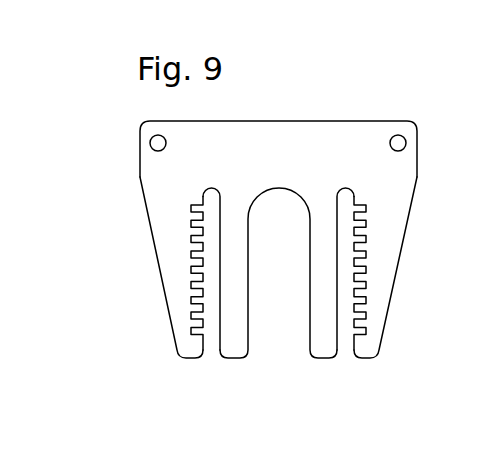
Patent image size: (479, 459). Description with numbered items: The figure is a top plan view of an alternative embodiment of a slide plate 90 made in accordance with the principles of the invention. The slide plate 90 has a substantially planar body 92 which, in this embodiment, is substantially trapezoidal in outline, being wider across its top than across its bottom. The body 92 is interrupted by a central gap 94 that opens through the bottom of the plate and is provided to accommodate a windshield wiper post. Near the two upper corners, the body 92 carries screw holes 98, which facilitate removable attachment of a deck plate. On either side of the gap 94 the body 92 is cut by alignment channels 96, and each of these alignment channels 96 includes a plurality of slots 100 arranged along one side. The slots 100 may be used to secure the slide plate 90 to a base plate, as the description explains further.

The slide plate 90 is at (328, 108).
The body 92 is at (266, 135).
The gap 94 is at (268, 275).
The alignment channels 96 is at (208, 360).
The screw holes 98 is at (150, 143).
The slots 100 is at (193, 300).